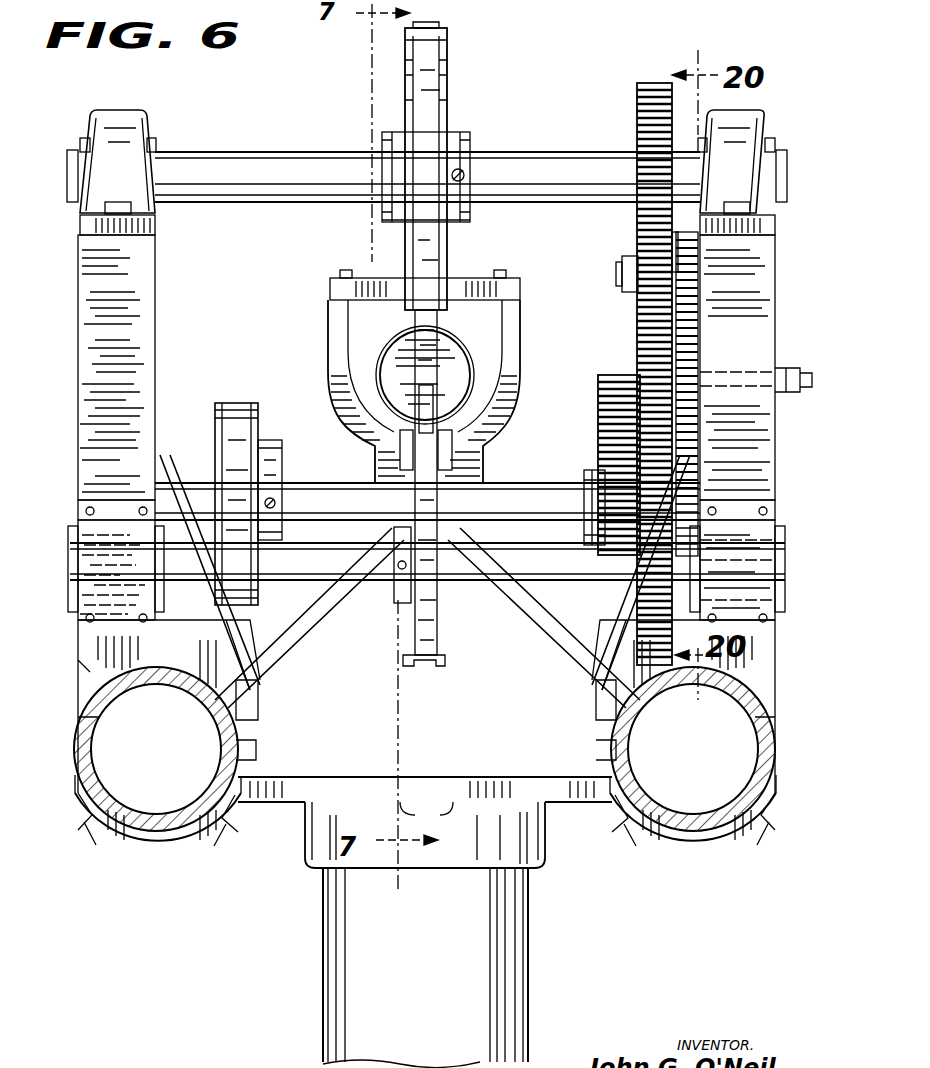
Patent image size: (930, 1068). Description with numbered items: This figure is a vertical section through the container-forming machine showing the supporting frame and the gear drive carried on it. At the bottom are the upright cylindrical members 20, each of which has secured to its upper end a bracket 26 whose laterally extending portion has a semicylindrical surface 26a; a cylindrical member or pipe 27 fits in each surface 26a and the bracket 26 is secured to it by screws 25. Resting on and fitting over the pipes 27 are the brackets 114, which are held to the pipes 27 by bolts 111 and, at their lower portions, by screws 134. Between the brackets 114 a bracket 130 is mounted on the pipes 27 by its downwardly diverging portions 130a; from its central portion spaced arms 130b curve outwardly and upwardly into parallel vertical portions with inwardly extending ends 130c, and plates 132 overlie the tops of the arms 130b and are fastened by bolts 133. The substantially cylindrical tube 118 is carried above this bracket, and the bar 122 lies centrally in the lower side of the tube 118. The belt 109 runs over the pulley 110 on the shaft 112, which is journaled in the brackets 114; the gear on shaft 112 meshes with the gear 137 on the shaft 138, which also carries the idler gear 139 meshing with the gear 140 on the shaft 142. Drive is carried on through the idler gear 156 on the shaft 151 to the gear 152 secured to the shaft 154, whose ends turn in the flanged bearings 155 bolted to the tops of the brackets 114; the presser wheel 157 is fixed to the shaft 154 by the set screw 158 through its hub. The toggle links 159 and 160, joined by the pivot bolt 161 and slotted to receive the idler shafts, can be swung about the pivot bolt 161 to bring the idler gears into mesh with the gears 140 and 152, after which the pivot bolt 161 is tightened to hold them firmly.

The cylindrical member 20 is at (488, 996).
The screws 25 is at (80, 826).
The bracket 26 is at (565, 802).
The semicylindrical surface 26a is at (160, 852).
The cylindrical member 27 is at (105, 796).
The belt 109 is at (232, 412).
The pulley 110 is at (268, 440).
The bolts 111 is at (80, 688).
The shaft 112 is at (528, 502).
The bracket 114 is at (142, 356).
The tube 118 is at (472, 358).
The bar 122 is at (418, 398).
The bracket 130 is at (413, 444).
The downwardly diverging portion 130a is at (500, 612).
The arm 130b is at (330, 312).
The inwardly extending end 130c is at (492, 330).
The plate 132 is at (500, 285).
The bolts 133 is at (346, 270).
The screws 134 is at (258, 683).
The gear 137 is at (606, 396).
The shaft 138 is at (592, 470).
The gear 139 is at (628, 356).
The gear 140 is at (580, 654).
The shaft 142 is at (370, 580).
The shaft 151 is at (628, 286).
The gear 152 is at (638, 100).
The shaft 154 is at (532, 172).
The bearing 155 is at (116, 136).
The gear 156 is at (80, 214).
The presser wheel 157 is at (428, 106).
The set screw 158 is at (458, 168).
The link 159 is at (690, 474).
The link 160 is at (702, 256).
The pivot bolt 161 is at (706, 378).